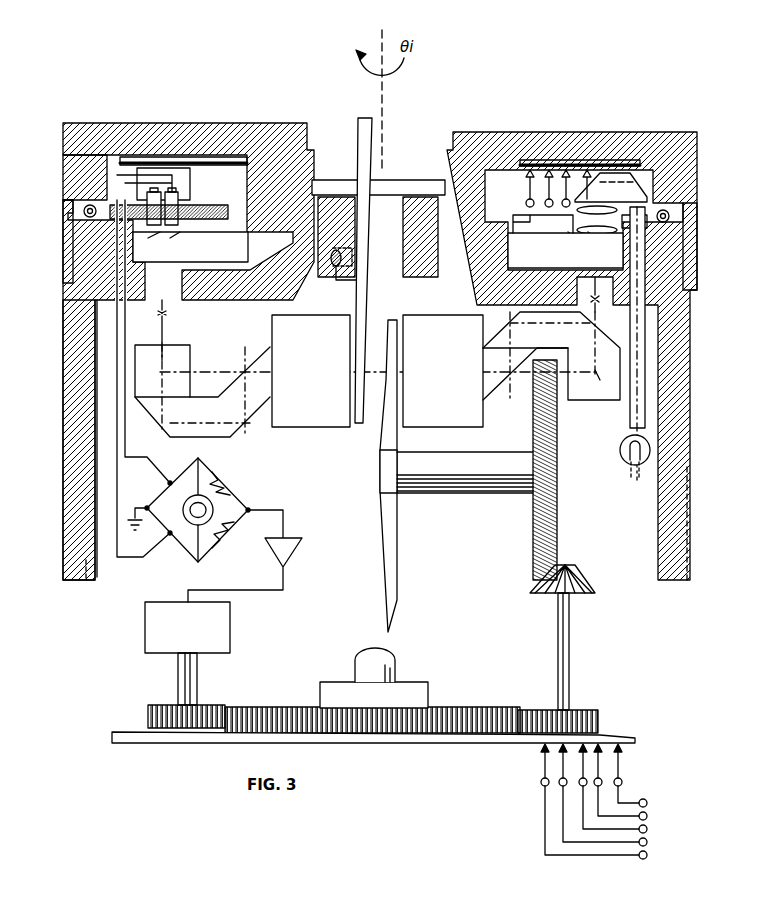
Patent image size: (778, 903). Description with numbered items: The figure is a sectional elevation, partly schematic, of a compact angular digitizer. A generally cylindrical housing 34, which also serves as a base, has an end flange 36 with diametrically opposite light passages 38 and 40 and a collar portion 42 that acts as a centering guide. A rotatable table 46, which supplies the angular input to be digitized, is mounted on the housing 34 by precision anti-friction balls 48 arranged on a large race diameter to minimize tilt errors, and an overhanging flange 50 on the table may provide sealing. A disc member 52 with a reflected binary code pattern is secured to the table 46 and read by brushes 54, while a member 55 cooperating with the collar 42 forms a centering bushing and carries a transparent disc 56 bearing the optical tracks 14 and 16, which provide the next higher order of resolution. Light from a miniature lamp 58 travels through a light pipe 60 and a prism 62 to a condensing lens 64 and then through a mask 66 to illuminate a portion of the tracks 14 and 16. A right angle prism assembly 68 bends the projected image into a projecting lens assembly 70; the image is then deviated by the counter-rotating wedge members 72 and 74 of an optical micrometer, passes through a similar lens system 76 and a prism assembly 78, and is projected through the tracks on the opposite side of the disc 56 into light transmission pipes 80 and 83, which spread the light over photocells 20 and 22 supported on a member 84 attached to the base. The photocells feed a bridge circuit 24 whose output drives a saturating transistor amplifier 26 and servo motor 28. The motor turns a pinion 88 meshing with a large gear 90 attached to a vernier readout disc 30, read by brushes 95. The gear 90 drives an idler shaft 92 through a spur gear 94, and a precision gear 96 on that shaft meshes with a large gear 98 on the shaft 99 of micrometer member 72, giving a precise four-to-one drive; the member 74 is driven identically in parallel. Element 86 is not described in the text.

The optical track 14 is at (377, 246).
The optical track 16 is at (380, 246).
The photocell 20 is at (152, 468).
The photocell 22 is at (117, 485).
The bridge circuit 24 is at (242, 490).
The saturating transistor amplifier 26 is at (288, 545).
The servo motor 28 is at (150, 637).
The vernier readout disc 30 is at (112, 735).
The housing 34 is at (68, 500).
The end flange 36 is at (226, 300).
The light passage 38 is at (173, 365).
The light passage 40 is at (598, 305).
The collar portion 42 is at (404, 262).
The table 46 is at (278, 132).
The anti-friction balls 48 is at (83, 212).
The overhanging flange 50 is at (65, 270).
The disc member 52 is at (205, 160).
The brushes 54 is at (526, 190).
The member 55 is at (312, 170).
The transparent disc 56 is at (190, 247).
The miniature lamp 58 is at (620, 455).
The light pipe 60 is at (630, 412).
The prism 62 is at (645, 190).
The condensing lens 64 is at (578, 184).
The mask 66 is at (580, 232).
The right angle prism assembly 68 is at (580, 400).
The projecting lens assembly 70 is at (443, 371).
The optical micrometer member 72 is at (375, 450).
The optical micrometer member 74 is at (360, 306).
The lens system 76 is at (311, 371).
The prism assembly 78 is at (204, 397).
The light transmission pipe 80 is at (158, 197).
The light transmission pipe 83 is at (178, 200).
The support member 84 is at (226, 212).
The detector unit 86 is at (152, 168).
The pinion 88 is at (205, 705).
The large gear 90 is at (303, 715).
The idler shaft 92 is at (558, 636).
The spur gear 94 is at (575, 710).
The brushes 95 is at (620, 772).
The precision gear 96 is at (582, 578).
The large gear 98 is at (533, 505).
The shaft 99 is at (484, 462).